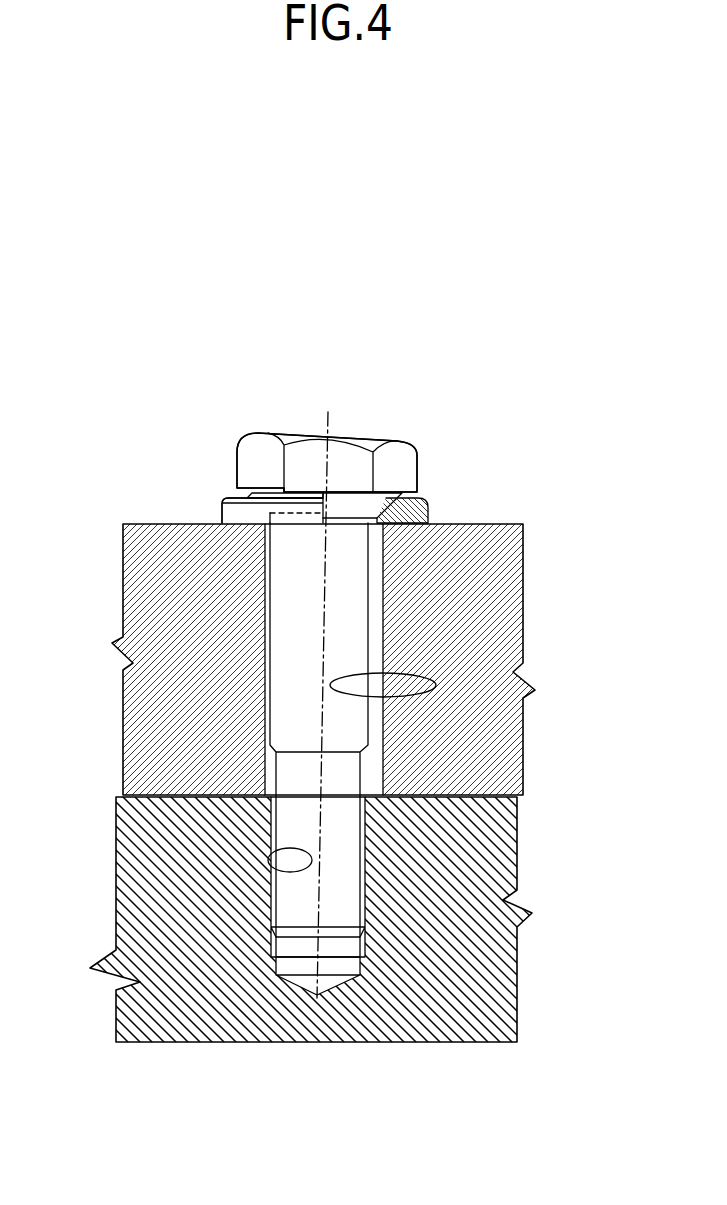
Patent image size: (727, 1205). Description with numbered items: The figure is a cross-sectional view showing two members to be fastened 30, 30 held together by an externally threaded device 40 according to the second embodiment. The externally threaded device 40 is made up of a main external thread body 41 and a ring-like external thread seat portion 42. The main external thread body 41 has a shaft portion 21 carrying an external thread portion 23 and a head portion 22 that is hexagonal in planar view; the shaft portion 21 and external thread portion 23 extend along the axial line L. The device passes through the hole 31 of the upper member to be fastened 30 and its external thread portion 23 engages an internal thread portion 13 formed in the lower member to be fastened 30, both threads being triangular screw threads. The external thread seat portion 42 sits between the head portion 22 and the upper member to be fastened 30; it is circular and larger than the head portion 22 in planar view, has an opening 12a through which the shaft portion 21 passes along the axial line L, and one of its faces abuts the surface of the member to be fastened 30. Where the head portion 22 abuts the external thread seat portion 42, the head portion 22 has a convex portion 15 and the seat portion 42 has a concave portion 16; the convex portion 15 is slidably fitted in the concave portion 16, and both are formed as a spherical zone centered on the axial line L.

The opening 12a is at (270, 513).
The internal thread portion 13 is at (268, 861).
The convex portion 15 is at (373, 483).
The concave portion 16 is at (423, 500).
The shaft portion 21 is at (424, 694).
The head portion 22 is at (262, 450).
The external thread portion 23 is at (370, 877).
The member to be fastened 30 is at (493, 573).
The hole 31 is at (434, 690).
The externally threaded device 40 is at (234, 446).
The main external thread body 41 is at (253, 470).
The external thread seat portion 42 is at (217, 515).
The axial line L is at (331, 427).